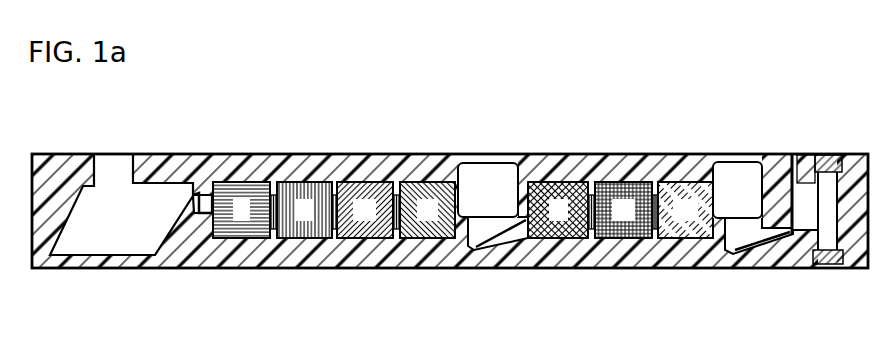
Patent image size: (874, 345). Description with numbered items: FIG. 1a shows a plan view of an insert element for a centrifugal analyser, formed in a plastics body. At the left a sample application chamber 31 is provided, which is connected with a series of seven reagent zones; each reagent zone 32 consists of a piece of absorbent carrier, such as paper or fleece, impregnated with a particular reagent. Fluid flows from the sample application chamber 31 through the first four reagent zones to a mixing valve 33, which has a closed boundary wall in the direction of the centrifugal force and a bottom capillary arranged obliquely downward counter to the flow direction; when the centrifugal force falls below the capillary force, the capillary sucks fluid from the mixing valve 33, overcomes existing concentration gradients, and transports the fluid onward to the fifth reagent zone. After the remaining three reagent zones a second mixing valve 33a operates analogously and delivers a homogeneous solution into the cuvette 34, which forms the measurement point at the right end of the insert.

The sample application chamber 31 is at (118, 196).
The functional blocks I-VII 32 is at (410, 182).
The mixing valve I 33 is at (485, 178).
The mixing valve II 33a is at (735, 176).
The measurement point (cuvette) 34 is at (829, 166).